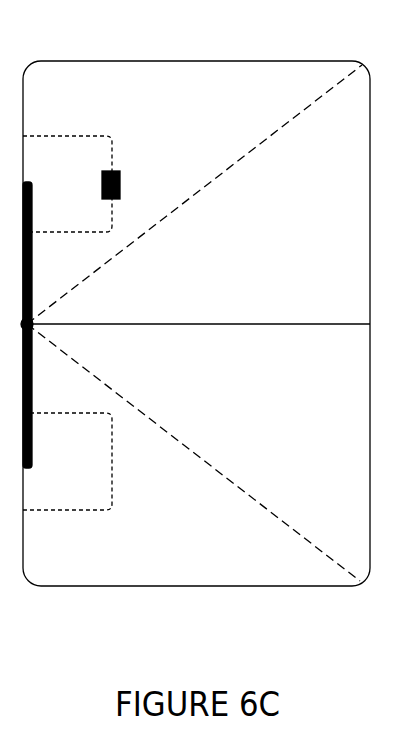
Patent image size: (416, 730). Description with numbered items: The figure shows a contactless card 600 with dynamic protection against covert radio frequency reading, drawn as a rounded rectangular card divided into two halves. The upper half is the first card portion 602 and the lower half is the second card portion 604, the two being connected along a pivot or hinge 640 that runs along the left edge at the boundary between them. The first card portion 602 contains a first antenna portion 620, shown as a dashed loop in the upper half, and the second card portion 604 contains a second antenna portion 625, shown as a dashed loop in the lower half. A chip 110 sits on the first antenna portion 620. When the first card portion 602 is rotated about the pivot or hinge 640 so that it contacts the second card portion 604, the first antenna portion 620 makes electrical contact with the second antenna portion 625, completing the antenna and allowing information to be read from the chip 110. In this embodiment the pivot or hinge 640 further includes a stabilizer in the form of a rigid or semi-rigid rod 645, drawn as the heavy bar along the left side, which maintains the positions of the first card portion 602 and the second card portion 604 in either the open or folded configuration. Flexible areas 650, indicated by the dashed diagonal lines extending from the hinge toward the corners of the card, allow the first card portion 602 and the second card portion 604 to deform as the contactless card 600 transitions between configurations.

The contactless card 600 is at (301, 600).
The first card portion 602 is at (262, 287).
The second card portion 604 is at (262, 415).
The chip 110 is at (126, 164).
The first antenna portion 620 is at (58, 130).
The second antenna portion 625 is at (121, 486).
The pivot or hinge 640 is at (42, 318).
The rigid or semi-rigid rod 645 is at (33, 373).
The flexible areas 650 is at (263, 147).